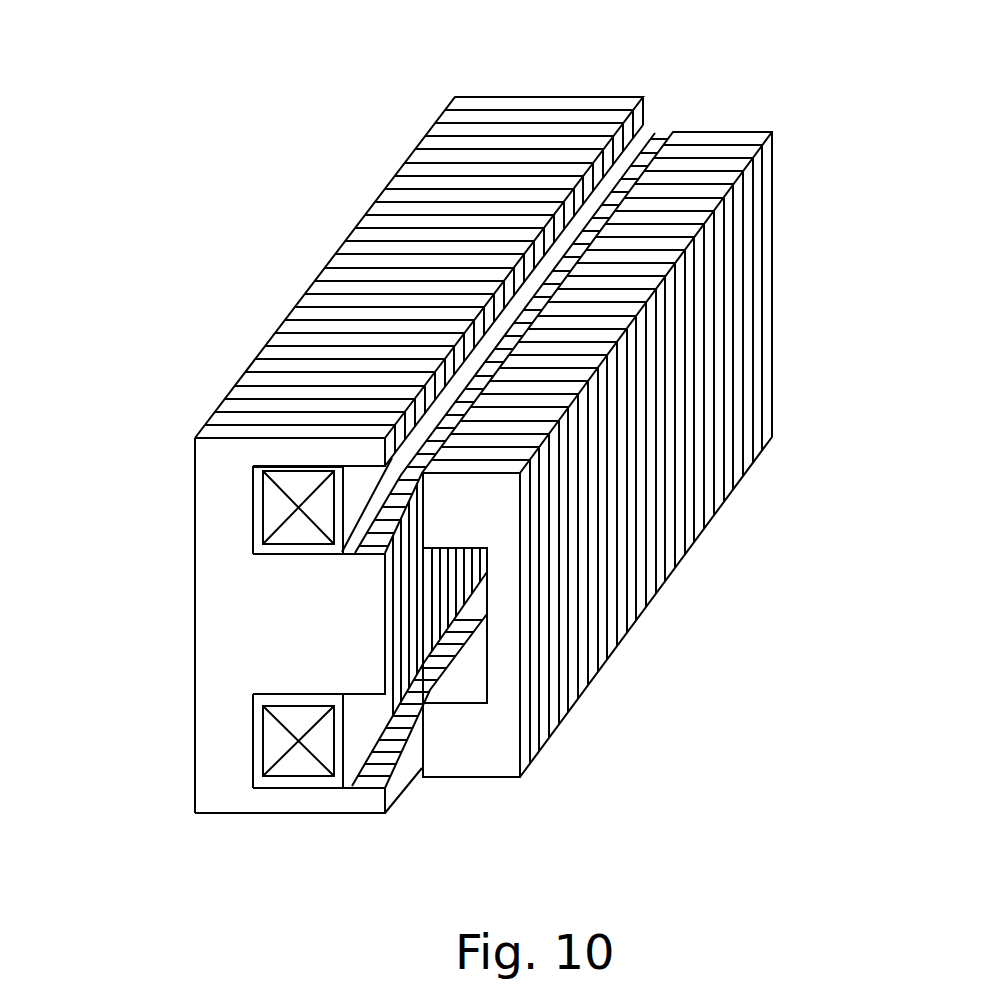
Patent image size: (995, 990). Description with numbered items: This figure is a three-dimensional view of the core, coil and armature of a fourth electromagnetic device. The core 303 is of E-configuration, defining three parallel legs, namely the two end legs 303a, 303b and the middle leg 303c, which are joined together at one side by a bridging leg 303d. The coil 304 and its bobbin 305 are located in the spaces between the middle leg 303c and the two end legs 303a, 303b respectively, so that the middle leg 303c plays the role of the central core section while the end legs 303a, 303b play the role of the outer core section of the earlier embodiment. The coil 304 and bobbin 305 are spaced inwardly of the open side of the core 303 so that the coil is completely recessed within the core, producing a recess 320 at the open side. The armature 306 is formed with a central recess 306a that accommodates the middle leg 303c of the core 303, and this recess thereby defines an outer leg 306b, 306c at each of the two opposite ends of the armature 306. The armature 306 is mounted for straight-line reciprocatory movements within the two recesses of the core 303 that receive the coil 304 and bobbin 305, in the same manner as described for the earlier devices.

The core 303 is at (194, 555).
The end leg 303a is at (292, 450).
The end leg 303b is at (300, 805).
The middle leg 303c is at (262, 643).
The bridging leg 303d is at (222, 651).
The coil 304 is at (290, 480).
The bobbin 305 is at (258, 497).
The armature 306 is at (781, 122).
The central recess 306a is at (476, 656).
The outer leg 306b is at (490, 512).
The outer leg 306c is at (478, 758).
The recess 320 is at (363, 495).